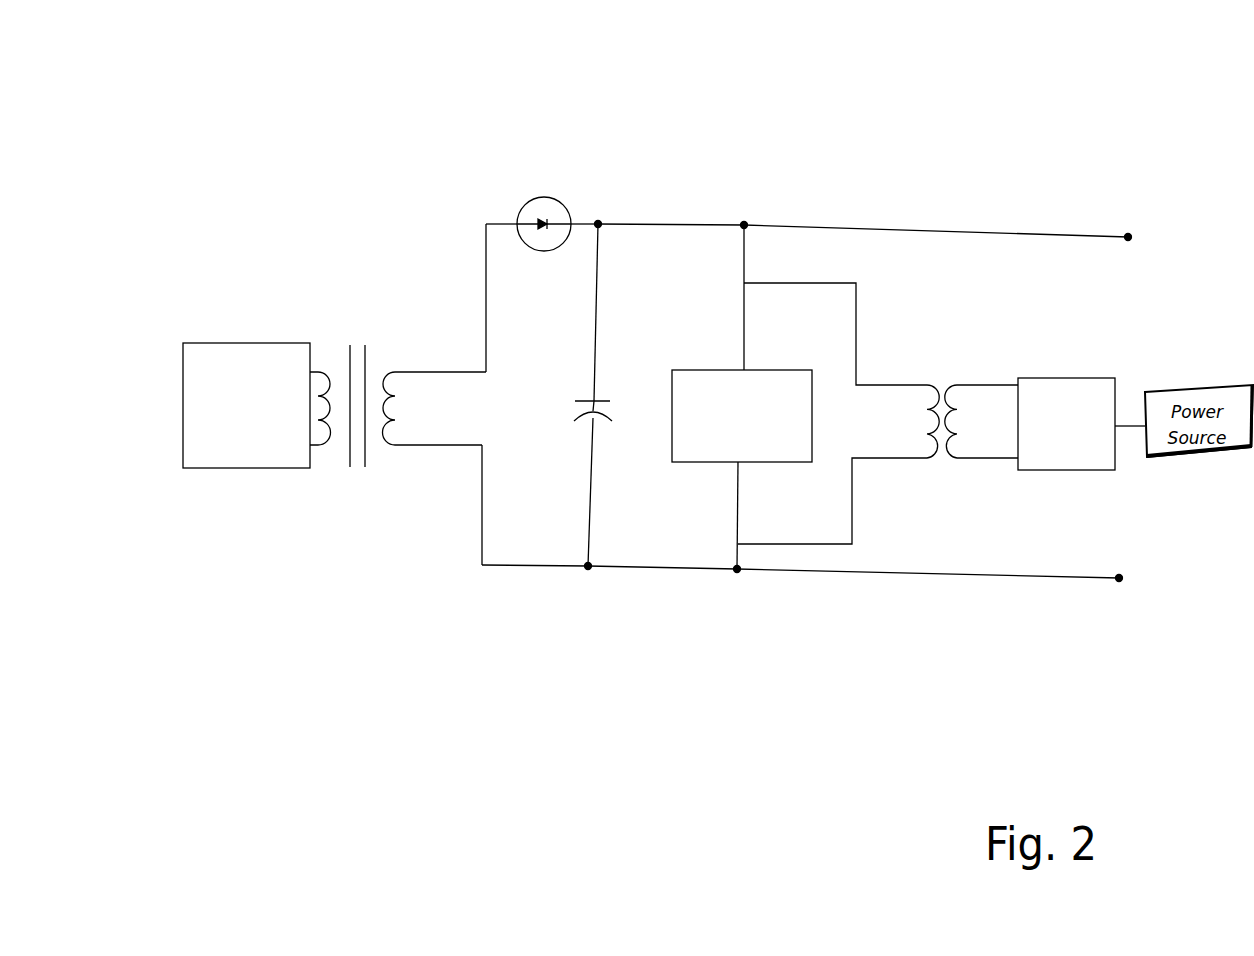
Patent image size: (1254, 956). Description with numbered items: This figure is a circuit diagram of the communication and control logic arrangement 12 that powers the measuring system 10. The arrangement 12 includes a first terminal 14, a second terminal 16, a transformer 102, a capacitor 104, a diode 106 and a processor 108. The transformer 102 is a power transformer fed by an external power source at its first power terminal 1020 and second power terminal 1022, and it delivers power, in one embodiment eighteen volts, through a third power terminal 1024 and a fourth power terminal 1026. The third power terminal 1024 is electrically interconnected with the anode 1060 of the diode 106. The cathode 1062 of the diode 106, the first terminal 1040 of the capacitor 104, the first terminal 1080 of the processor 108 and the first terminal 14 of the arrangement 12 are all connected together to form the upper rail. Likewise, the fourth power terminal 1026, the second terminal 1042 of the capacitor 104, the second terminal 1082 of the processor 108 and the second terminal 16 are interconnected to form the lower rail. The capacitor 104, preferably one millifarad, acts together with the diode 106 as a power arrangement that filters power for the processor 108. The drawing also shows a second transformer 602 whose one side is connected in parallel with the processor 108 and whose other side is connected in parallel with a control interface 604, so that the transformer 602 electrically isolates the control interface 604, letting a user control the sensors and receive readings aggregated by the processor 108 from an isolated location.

The measuring system 10 is at (249, 808).
The communication and control logic arrangement 12 is at (781, 737).
The first terminal 14 is at (1128, 237).
The second terminal 16 is at (1119, 578).
The transformer 102 is at (392, 446).
The capacitor 104 is at (580, 428).
The diode 106 is at (543, 195).
The processor 108 is at (713, 462).
The transformer 602 is at (953, 458).
The control interface 604 is at (1085, 470).
The first power terminal 1020 is at (483, 360).
The second power terminal 1022 is at (480, 465).
The third power terminal 1024 is at (486, 240).
The fourth power terminal 1026 is at (488, 566).
The first terminal of the capacitor 1040 is at (600, 238).
The second terminal of the capacitor 1042 is at (590, 551).
The anode 1060 is at (507, 222).
The cathode 1062 is at (578, 222).
The first terminal of the processor 1080 is at (744, 240).
The second terminal of the processor 1082 is at (738, 550).